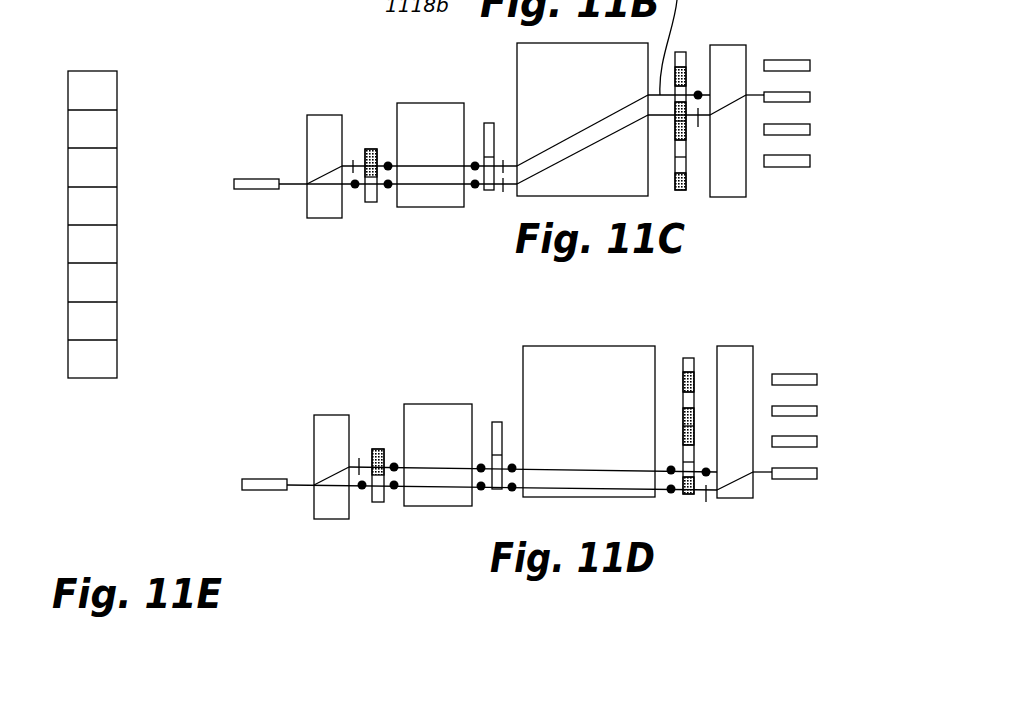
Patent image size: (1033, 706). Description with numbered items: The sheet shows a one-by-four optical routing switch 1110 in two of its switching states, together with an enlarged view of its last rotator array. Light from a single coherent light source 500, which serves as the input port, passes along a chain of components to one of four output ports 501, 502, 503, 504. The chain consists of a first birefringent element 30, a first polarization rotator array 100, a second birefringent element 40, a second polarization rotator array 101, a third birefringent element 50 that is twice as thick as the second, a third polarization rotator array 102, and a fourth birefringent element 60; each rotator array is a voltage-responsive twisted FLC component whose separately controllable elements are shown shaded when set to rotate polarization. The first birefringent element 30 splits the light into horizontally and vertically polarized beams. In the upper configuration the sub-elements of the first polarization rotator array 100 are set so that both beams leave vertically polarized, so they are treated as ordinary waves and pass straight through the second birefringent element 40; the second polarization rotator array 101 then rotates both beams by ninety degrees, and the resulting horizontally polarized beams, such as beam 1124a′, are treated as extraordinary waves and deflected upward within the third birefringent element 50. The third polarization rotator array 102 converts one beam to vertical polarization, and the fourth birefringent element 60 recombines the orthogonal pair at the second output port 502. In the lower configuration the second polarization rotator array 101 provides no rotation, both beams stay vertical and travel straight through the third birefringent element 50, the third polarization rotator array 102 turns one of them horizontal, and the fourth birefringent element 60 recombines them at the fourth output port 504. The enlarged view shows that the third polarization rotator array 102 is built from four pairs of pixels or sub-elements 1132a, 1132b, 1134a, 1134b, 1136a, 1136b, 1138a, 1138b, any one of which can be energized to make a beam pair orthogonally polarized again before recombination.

In FIG. 11C, the switch 1110 is at (346, 76).
In FIG. 11D, the switch 1110 is at (351, 376).
In FIG. 11C, the light source 500 is at (256, 198).
In FIG. 11D, the light source 500 is at (270, 492).
In FIG. 11C, the first birefringent element 30 is at (325, 115).
In FIG. 11D, the first birefringent element 30 is at (327, 415).
In FIG. 11C, the first polarization rotator array 100 is at (372, 149).
In FIG. 11D, the first polarization rotator array 100 is at (380, 449).
In FIG. 11C, the second birefringent element 40 is at (430, 155).
In FIG. 11D, the second birefringent element 40 is at (430, 404).
In FIG. 11C, the third birefringent element 50 is at (539, 44).
In FIG. 11D, the third birefringent element 50 is at (560, 346).
In FIG. 11C, the fourth birefringent element 60 is at (747, 44).
In FIG. 11D, the fourth birefringent element 60 is at (727, 346).
In FIG. 11D, the second polarization rotator array 101 is at (493, 422).
In FIG. 11C, the third polarization rotator array 102 is at (681, 52).
In FIG. 11D, the third polarization rotator array 102 is at (687, 358).
In FIG. 11E, the third polarization rotator array 102 is at (96, 452).
In FIG. 11C, the first output port 501 is at (810, 60).
In FIG. 11D, the first output port 501 is at (817, 374).
In FIG. 11C, the second output port 502 is at (810, 92).
In FIG. 11D, the second output port 502 is at (817, 406).
In FIG. 11C, the third output port 503 is at (810, 124).
In FIG. 11D, the third output port 503 is at (817, 436).
In FIG. 11C, the fourth output port 504 is at (810, 155).
In FIG. 11D, the fourth output port 504 is at (817, 470).
In FIG. 11C, the horizontally polarized beam 1124a′ is at (502, 158).
In FIG. 11E, the sub-element 1132a is at (102, 87).
In FIG. 11E, the sub-element 1132b is at (100, 131).
In FIG. 11E, the sub-element 1134a is at (100, 168).
In FIG. 11E, the sub-element 1134b is at (102, 208).
In FIG. 11E, the sub-element 1136a is at (105, 243).
In FIG. 11E, the sub-element 1136b is at (95, 281).
In FIG. 11E, the sub-element 1138a is at (100, 329).
In FIG. 11E, the sub-element 1138b is at (100, 357).